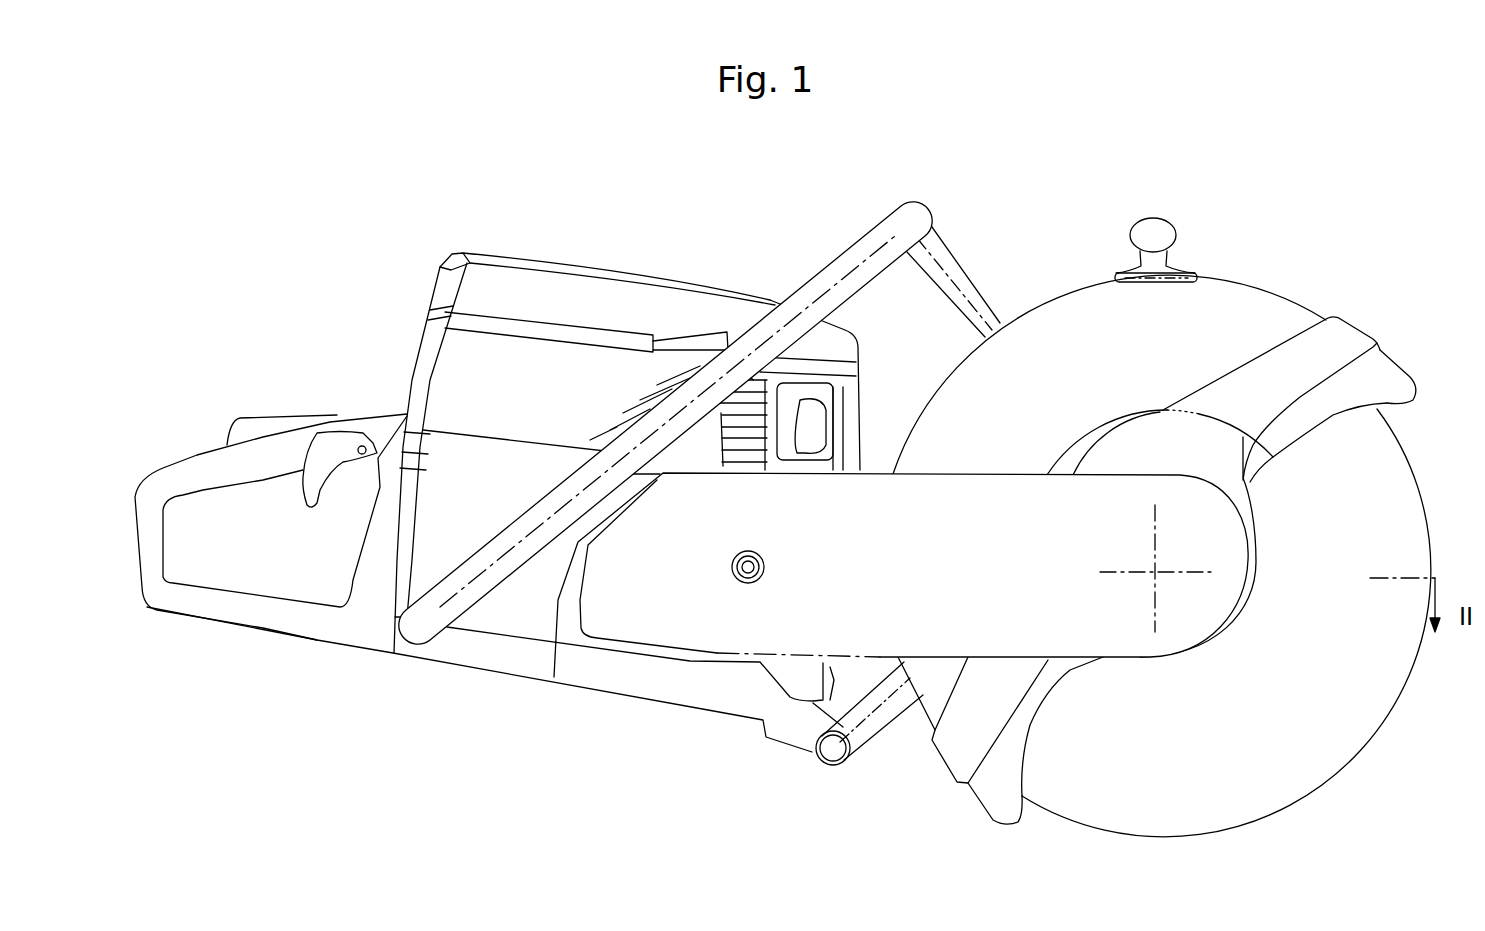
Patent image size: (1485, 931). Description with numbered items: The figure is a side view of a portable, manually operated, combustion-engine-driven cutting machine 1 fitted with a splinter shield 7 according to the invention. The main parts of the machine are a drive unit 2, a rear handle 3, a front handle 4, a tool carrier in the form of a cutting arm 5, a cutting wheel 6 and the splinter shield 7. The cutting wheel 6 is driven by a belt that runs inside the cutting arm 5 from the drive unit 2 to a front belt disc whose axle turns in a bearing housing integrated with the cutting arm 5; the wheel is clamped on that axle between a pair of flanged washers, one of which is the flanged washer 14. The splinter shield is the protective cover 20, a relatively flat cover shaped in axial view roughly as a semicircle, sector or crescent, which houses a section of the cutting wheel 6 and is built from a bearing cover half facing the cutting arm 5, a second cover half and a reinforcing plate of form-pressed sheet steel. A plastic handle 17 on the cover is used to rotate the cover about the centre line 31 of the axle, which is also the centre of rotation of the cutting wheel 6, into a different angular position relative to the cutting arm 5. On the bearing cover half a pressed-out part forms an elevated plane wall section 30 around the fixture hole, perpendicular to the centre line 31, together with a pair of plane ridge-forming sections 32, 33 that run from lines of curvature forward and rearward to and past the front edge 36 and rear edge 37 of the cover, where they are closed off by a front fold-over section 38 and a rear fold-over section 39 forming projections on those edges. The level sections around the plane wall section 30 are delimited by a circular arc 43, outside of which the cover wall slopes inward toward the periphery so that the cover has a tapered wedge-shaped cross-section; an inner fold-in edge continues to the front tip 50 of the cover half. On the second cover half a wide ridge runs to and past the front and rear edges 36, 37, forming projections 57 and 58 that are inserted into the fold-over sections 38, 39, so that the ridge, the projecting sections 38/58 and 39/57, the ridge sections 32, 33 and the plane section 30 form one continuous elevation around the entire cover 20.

The cutting machine 1 is at (694, 243).
The drive unit 2 is at (543, 256).
The rear handle 3 is at (197, 465).
The front handle 4 is at (853, 250).
The cutting arm 5 is at (901, 529).
The cutting wheel 6 is at (1303, 768).
The splinter shield 7 is at (1117, 347).
The flanged washer 14 is at (1244, 608).
The handle 17 is at (1167, 237).
The protective cover 20 is at (1232, 289).
The plane wall section 30 is at (1140, 450).
The centre line 31 is at (1153, 571).
The ridge-forming section 32 is at (990, 692).
The ridge-forming section 33 is at (1210, 392).
The front edge 36 is at (1297, 303).
The rear edge 37 is at (917, 723).
The front fold-over section 38 is at (1318, 329).
The rear fold-over section 39 is at (957, 750).
The circular arc 43 is at (1055, 458).
The front tip 50 is at (1417, 395).
The projection 57 is at (943, 763).
The projection 58 is at (1318, 329).